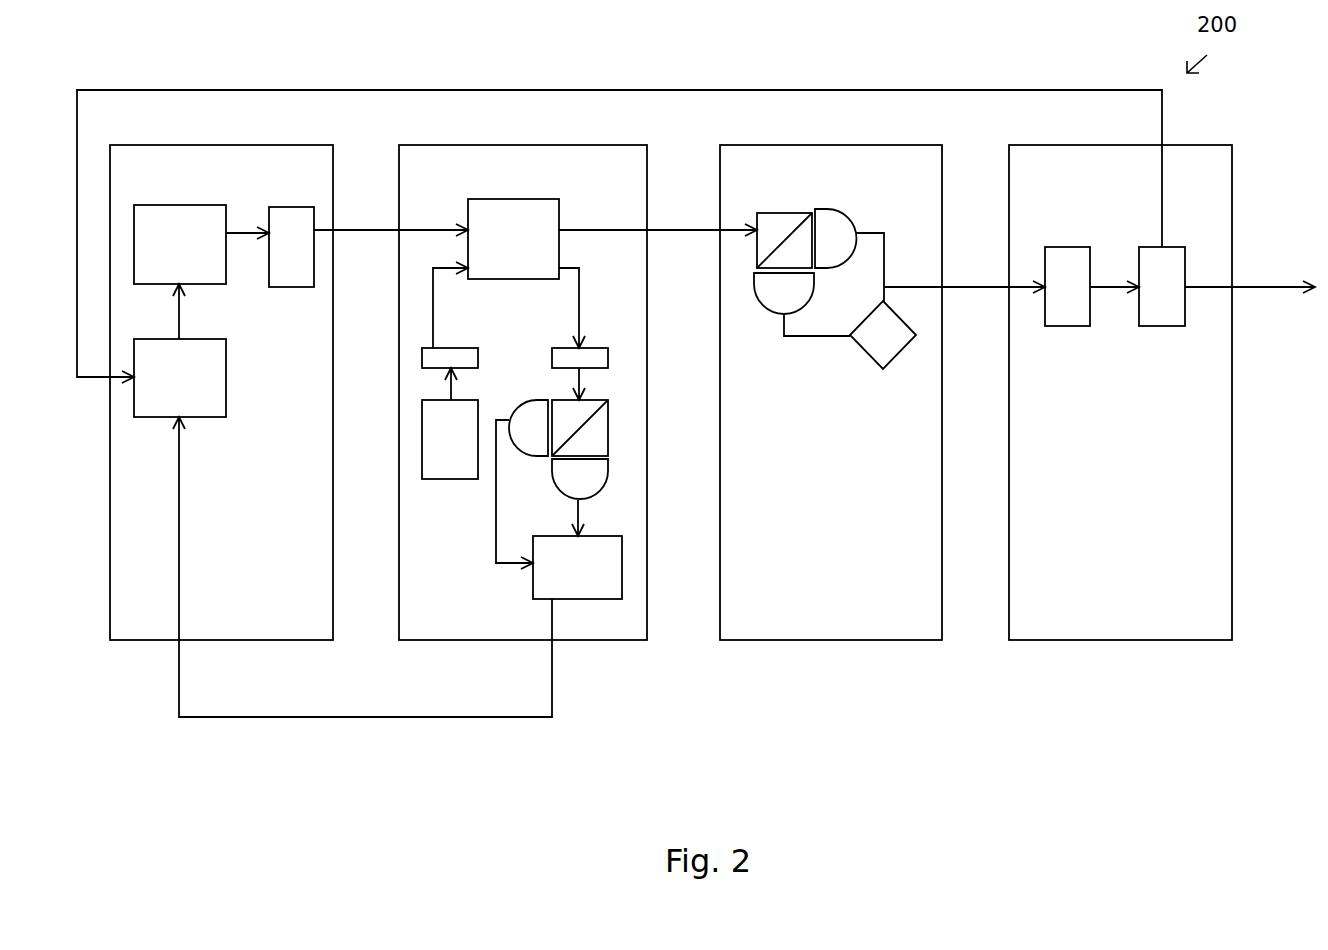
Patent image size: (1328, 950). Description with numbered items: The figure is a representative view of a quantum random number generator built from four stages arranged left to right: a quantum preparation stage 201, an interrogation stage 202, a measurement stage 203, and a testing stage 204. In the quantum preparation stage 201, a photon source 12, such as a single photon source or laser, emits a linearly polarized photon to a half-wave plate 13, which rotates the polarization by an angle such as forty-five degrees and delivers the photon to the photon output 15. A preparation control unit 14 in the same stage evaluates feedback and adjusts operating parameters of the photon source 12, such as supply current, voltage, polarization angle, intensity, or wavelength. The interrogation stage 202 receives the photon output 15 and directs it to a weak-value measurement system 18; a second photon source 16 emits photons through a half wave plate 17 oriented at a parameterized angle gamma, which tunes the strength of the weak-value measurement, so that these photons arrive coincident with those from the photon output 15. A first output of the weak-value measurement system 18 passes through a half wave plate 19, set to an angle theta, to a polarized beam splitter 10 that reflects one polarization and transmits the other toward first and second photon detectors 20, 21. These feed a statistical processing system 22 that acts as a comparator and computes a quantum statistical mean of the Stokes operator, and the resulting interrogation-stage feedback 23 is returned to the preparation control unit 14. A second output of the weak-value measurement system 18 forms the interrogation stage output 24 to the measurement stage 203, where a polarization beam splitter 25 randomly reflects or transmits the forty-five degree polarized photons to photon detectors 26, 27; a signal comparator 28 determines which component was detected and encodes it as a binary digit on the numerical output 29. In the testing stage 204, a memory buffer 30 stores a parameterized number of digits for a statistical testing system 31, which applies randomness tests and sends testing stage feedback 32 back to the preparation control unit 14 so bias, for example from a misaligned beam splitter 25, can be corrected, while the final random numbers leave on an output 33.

The quantum preparation stage 201 is at (137, 640).
The interrogation stage 202 is at (608, 640).
The measurement stage 203 is at (818, 640).
The testing stage 204 is at (1082, 640).
The polarized beam splitter 10 is at (593, 400).
The photon source 12 is at (205, 205).
The half-wave plate 13 is at (302, 207).
The preparation control unit 14 is at (226, 398).
The photon output 15 is at (383, 232).
The photon source 16 is at (443, 479).
The half wave plate 17 is at (458, 348).
The weak-value measurement system 18 is at (487, 199).
The half wave plate 19 is at (592, 348).
The first photon detector 20 is at (521, 401).
The second photon detector 21 is at (556, 492).
The statistical processing system 22 is at (533, 578).
The interrogation-stage feedback 23 is at (370, 717).
The interrogation stage output 24 is at (672, 230).
The polarization beam splitter 25 is at (760, 212).
The photon detector 26 is at (832, 209).
The photon detector 27 is at (755, 280).
The signal comparator 28 is at (906, 348).
The numerical output 29 is at (963, 287).
The memory buffer 30 is at (1055, 326).
The statistical testing system 31 is at (1148, 326).
The testing stage feedback 32 is at (655, 90).
The output 33 is at (1250, 287).